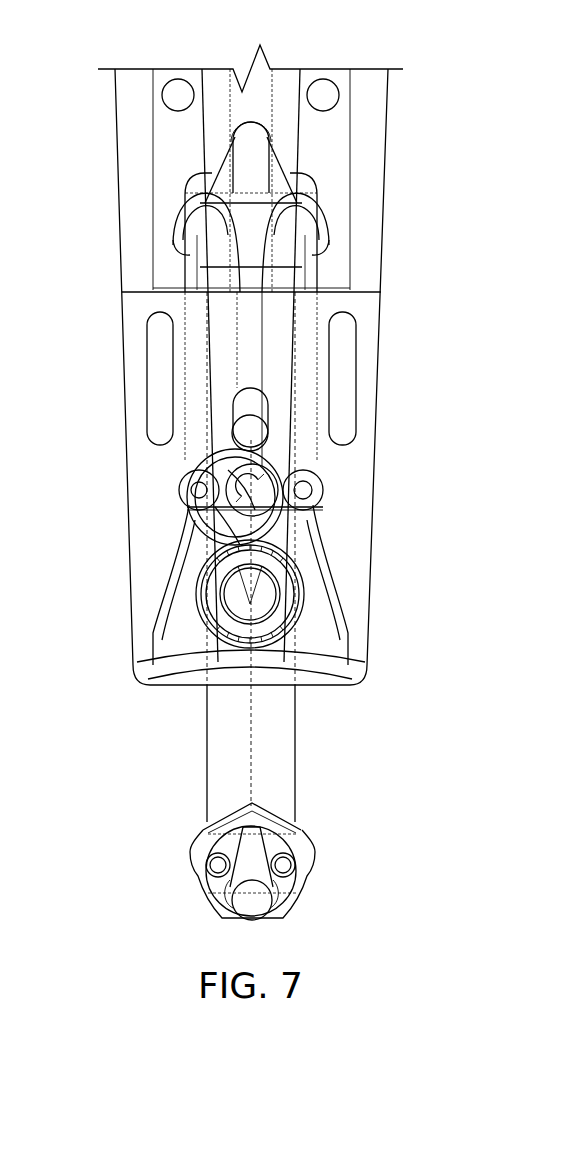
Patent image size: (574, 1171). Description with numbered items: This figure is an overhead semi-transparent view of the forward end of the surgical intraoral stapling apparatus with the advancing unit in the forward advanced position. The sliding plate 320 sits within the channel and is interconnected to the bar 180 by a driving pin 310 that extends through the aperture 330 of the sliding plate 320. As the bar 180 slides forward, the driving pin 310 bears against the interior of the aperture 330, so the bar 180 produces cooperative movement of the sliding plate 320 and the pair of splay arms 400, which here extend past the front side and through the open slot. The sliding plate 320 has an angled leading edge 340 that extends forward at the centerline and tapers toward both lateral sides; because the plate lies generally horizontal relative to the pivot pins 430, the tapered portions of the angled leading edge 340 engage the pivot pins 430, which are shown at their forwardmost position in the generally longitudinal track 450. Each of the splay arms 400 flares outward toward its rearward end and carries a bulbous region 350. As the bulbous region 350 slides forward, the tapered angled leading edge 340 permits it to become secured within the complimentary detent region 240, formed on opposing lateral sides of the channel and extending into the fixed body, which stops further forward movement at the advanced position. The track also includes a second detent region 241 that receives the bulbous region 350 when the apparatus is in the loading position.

The bar 180 is at (238, 104).
The track 450 is at (223, 236).
The second detent region 241 is at (323, 218).
The sliding plate 320 is at (225, 355).
The aperture 330 is at (265, 405).
The driving pin 310 is at (263, 433).
The angled leading edge 340 is at (200, 456).
The bulbous region 350 is at (325, 483).
The complimentary detent region 240 is at (317, 492).
The pivot pins 430 is at (323, 497).
The splay arms 400 is at (233, 752).